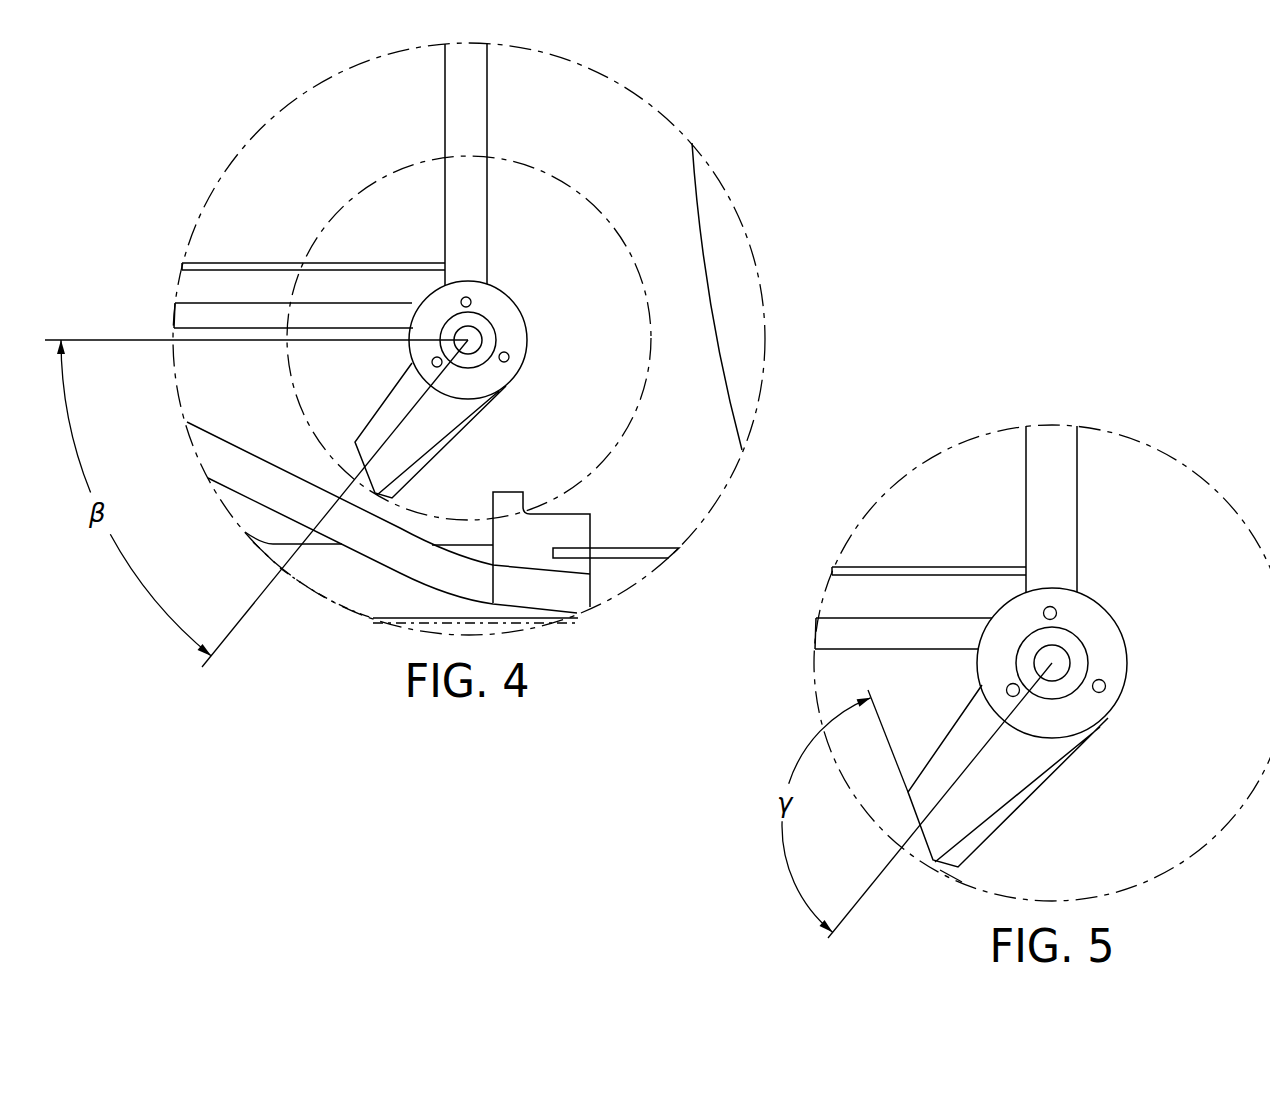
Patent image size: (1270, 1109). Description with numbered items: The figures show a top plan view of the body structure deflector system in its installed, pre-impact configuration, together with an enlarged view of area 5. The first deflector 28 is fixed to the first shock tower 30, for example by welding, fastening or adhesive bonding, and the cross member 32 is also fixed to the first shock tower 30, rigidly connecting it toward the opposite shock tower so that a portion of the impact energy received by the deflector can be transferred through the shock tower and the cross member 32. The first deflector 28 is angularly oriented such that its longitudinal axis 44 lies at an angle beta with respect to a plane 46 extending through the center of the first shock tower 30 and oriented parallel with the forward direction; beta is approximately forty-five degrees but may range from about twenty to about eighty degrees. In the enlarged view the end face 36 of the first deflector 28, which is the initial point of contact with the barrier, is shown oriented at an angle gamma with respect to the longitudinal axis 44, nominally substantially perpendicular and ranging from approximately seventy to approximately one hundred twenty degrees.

In FIG. 4, the area 5 is at (592, 200).
In FIG. 4, the first deflector 28 is at (443, 426).
In FIG. 5, the first deflector 28 is at (1025, 774).
In FIG. 4, the first shock tower 30 is at (510, 318).
In FIG. 5, the first shock tower 30 is at (1052, 663).
In FIG. 4, the cross member 32 is at (476, 118).
In FIG. 5, the cross member 32 is at (1051, 509).
In FIG. 5, the end face 36 is at (927, 851).
In FIG. 4, the longitudinal axis 44 is at (246, 614).
In FIG. 5, the longitudinal axis 44 is at (877, 880).
In FIG. 4, the plane 46 is at (150, 338).